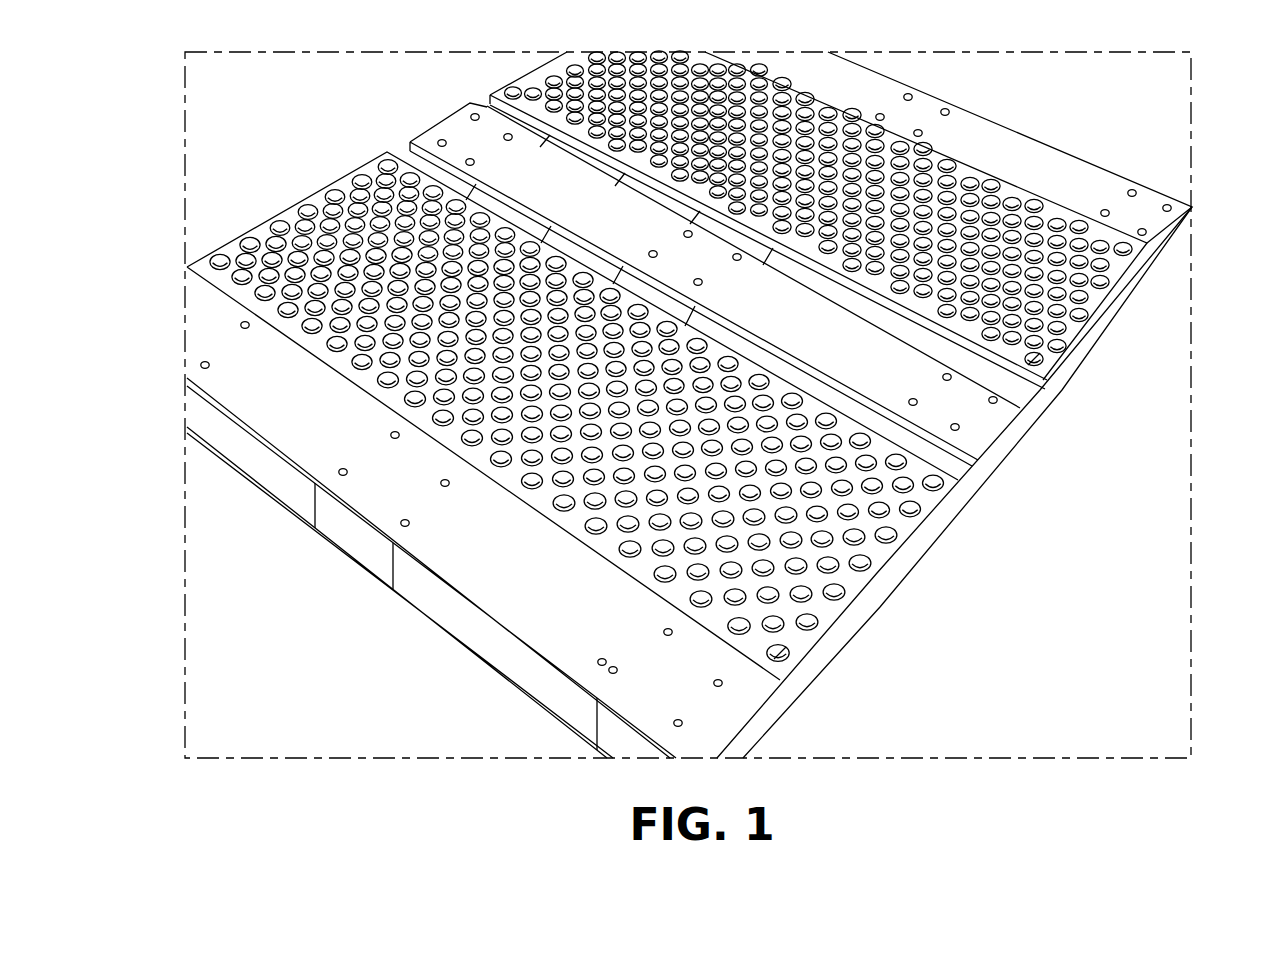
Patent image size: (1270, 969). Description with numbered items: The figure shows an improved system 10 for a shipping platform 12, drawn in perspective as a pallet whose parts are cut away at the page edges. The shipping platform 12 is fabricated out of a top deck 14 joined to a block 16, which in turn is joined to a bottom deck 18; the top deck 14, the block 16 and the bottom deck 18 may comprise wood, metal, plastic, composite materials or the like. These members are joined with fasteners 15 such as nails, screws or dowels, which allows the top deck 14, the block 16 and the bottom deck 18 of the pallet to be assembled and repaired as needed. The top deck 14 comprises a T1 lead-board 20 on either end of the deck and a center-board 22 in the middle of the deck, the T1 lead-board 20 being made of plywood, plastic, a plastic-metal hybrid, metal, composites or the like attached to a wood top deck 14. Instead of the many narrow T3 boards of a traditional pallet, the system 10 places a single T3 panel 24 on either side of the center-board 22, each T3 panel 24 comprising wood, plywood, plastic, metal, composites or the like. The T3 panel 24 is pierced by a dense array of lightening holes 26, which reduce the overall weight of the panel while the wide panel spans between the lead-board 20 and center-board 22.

The system 10 is at (360, 673).
The shipping platform 12 is at (427, 612).
The top deck 14 is at (837, 643).
The fasteners 15 is at (722, 683).
The block 16 is at (357, 542).
The bottom deck 18 is at (877, 608).
The T1 lead-board 20 is at (530, 633).
The center-board 22 is at (1038, 410).
The T3 panel 24 is at (922, 468).
The lightening holes 26 is at (793, 653).